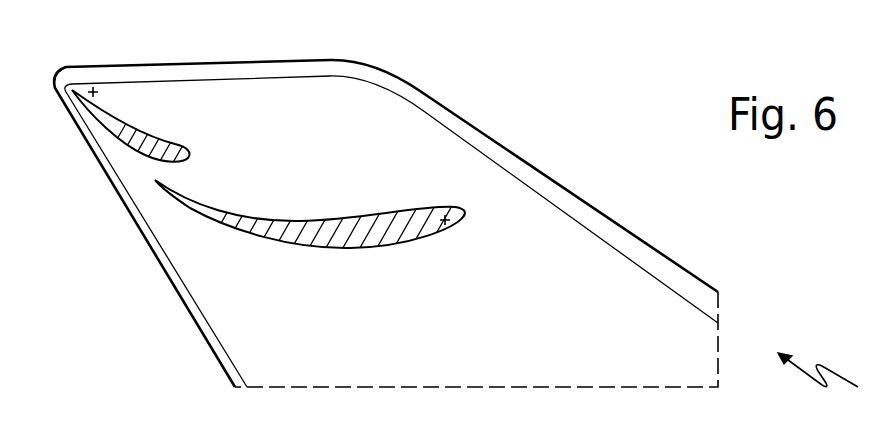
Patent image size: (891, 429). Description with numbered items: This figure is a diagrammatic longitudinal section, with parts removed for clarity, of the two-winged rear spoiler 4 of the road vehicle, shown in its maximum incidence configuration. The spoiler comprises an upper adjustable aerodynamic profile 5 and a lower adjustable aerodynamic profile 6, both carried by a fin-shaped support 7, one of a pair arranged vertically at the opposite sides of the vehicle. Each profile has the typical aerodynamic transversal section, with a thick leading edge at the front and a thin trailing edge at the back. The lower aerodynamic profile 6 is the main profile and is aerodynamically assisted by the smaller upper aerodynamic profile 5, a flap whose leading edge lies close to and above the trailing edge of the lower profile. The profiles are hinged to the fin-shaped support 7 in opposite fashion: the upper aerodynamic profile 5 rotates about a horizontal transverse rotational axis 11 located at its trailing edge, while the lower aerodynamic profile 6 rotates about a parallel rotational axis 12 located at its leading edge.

The rear spoiler 4 is at (824, 377).
The upper adjustable aerodynamic profile 5 is at (165, 147).
The lower adjustable aerodynamic profile 6 is at (348, 238).
The fin-shaped support 7 is at (255, 335).
The rotational axis 11 is at (85, 86).
The rotational axis 12 is at (455, 228).